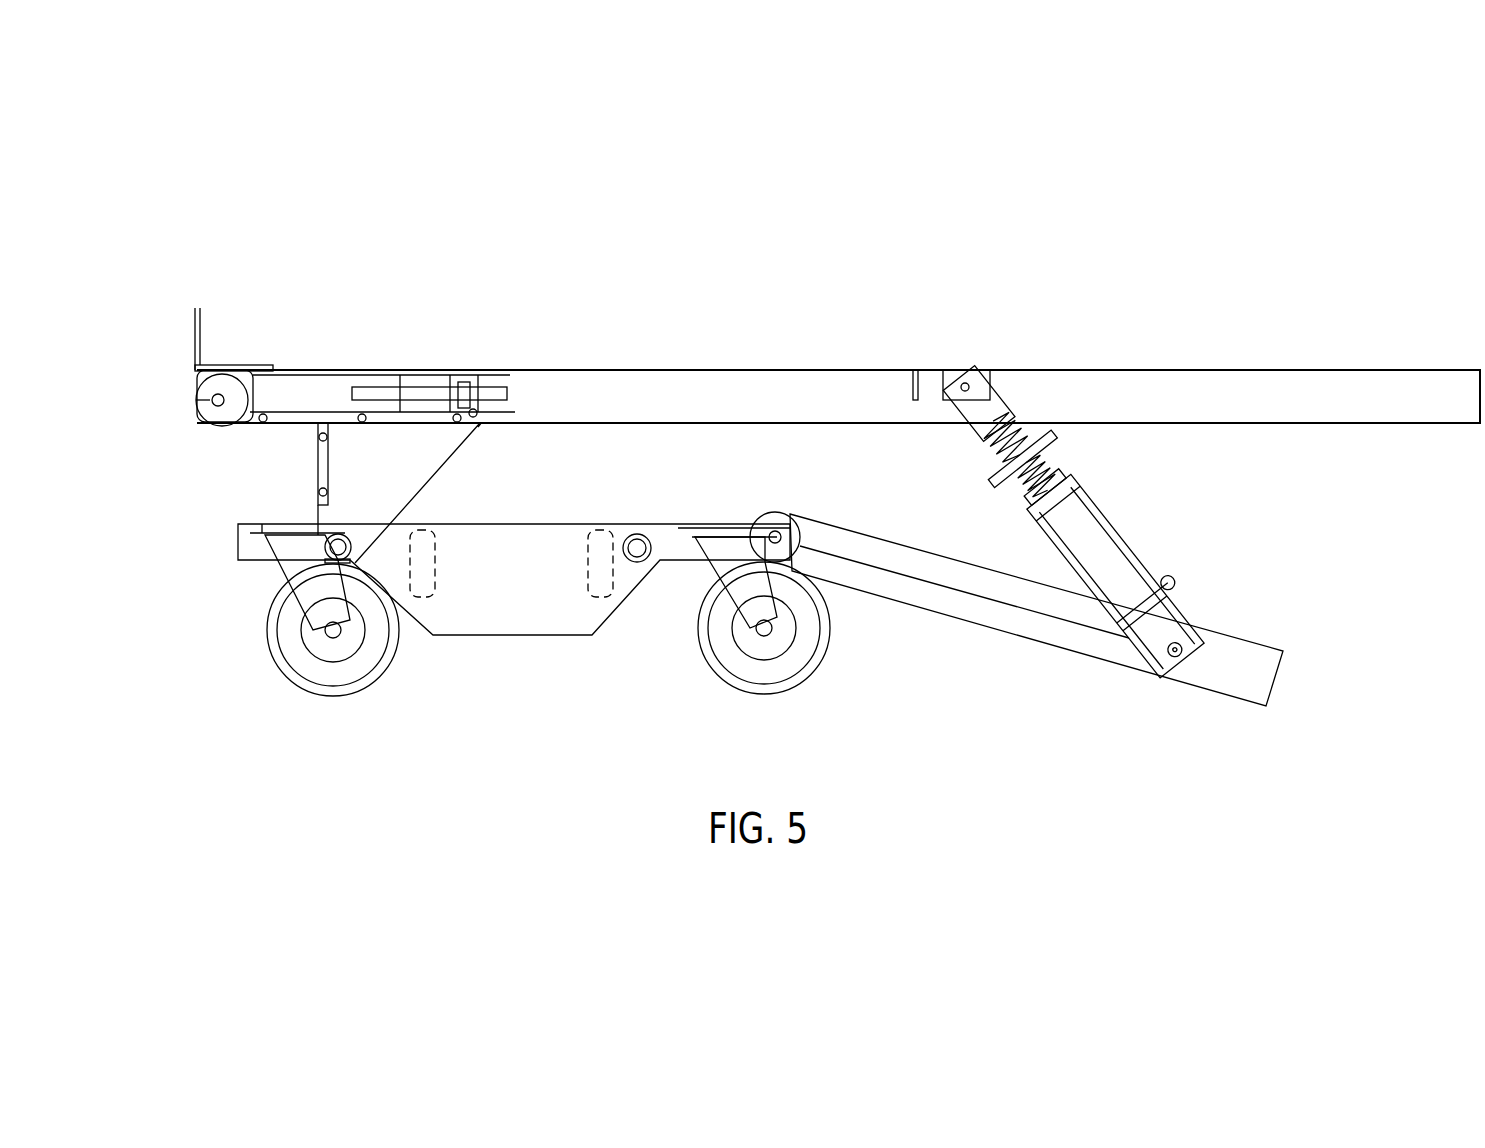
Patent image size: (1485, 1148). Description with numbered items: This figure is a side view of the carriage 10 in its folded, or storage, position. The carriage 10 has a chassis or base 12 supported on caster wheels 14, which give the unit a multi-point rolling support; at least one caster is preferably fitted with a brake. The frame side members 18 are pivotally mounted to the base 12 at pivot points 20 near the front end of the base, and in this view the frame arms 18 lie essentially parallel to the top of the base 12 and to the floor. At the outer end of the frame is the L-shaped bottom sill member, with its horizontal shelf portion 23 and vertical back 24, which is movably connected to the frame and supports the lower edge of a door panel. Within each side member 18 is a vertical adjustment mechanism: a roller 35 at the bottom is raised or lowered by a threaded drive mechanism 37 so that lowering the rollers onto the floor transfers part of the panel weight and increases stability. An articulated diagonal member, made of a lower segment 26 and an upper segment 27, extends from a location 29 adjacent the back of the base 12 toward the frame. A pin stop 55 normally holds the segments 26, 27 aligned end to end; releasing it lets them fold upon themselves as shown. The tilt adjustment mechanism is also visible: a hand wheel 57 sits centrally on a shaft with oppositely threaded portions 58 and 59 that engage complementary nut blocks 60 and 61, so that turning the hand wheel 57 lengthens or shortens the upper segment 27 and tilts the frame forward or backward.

The carriage 10 is at (660, 300).
The base 12 is at (531, 596).
The caster wheels 14 is at (283, 662).
The frame side members 18 is at (1180, 393).
The pivot points 20 is at (328, 540).
The shelf portion 23 is at (200, 325).
The vertical back 24 is at (258, 365).
The lower segment 26 is at (985, 612).
The upper segment 27 is at (1147, 551).
The location adjacent the back of the base 29 is at (776, 531).
The roller 35 is at (200, 398).
The threaded drive mechanism 37 is at (420, 393).
The pin stop 55 is at (1204, 576).
The hand wheel 57 is at (978, 460).
The threaded portion 58 is at (985, 454).
The threaded portion 59 is at (1010, 507).
The nut block 60 is at (956, 429).
The nut block 61 is at (1081, 480).